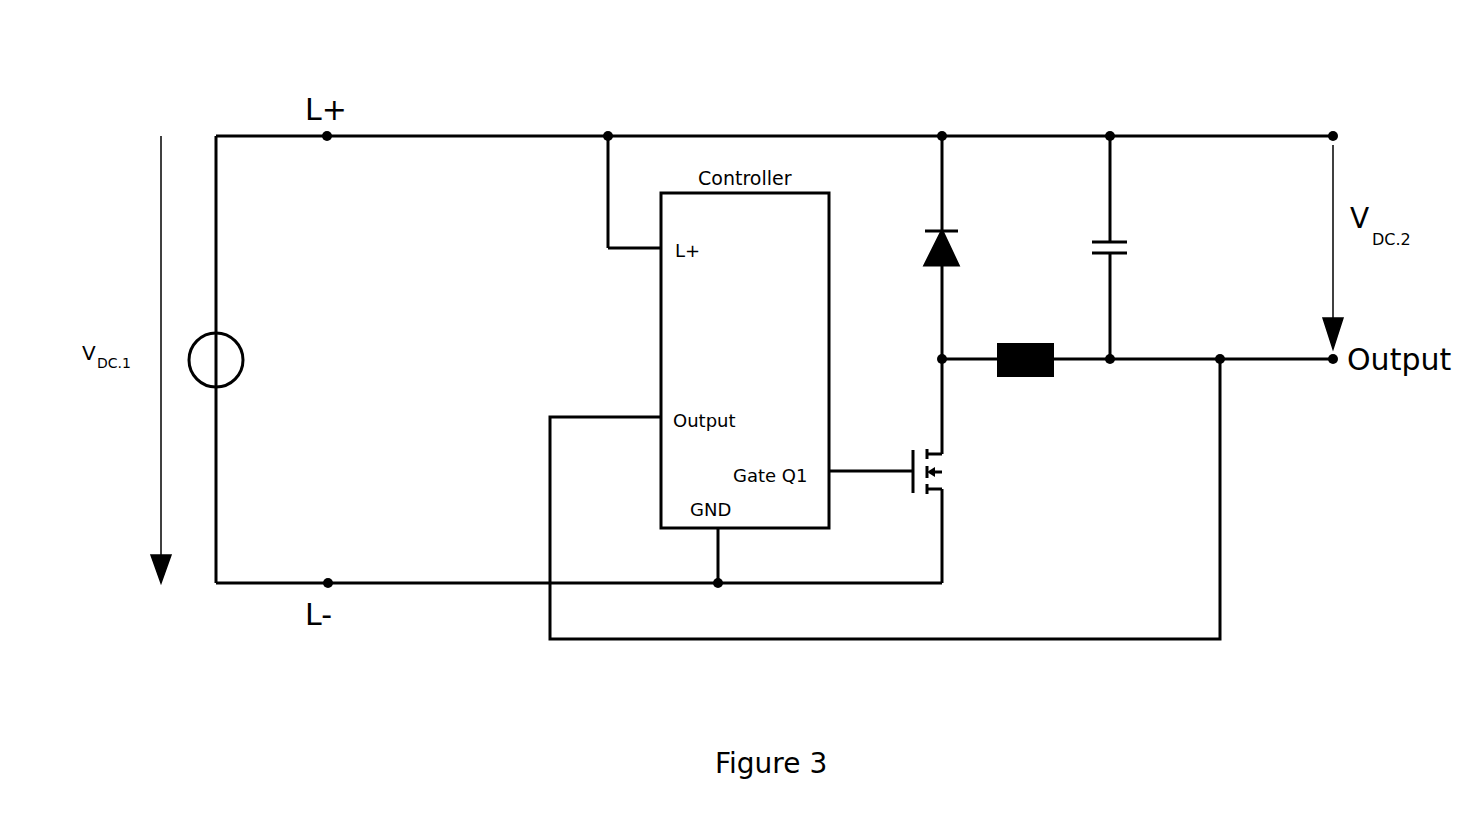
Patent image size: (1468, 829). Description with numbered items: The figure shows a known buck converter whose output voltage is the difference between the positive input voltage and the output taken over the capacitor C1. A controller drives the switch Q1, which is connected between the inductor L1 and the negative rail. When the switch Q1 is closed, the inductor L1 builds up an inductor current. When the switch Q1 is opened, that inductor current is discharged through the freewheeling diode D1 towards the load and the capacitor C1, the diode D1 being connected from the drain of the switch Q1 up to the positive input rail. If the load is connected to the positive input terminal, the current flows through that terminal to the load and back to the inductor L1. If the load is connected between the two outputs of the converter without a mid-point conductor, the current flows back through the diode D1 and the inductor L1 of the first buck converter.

The freewheeling diode D1 is at (965, 247).
The capacitor C1 is at (1127, 247).
The inductor L1 is at (1025, 339).
The switch Q1 is at (954, 471).